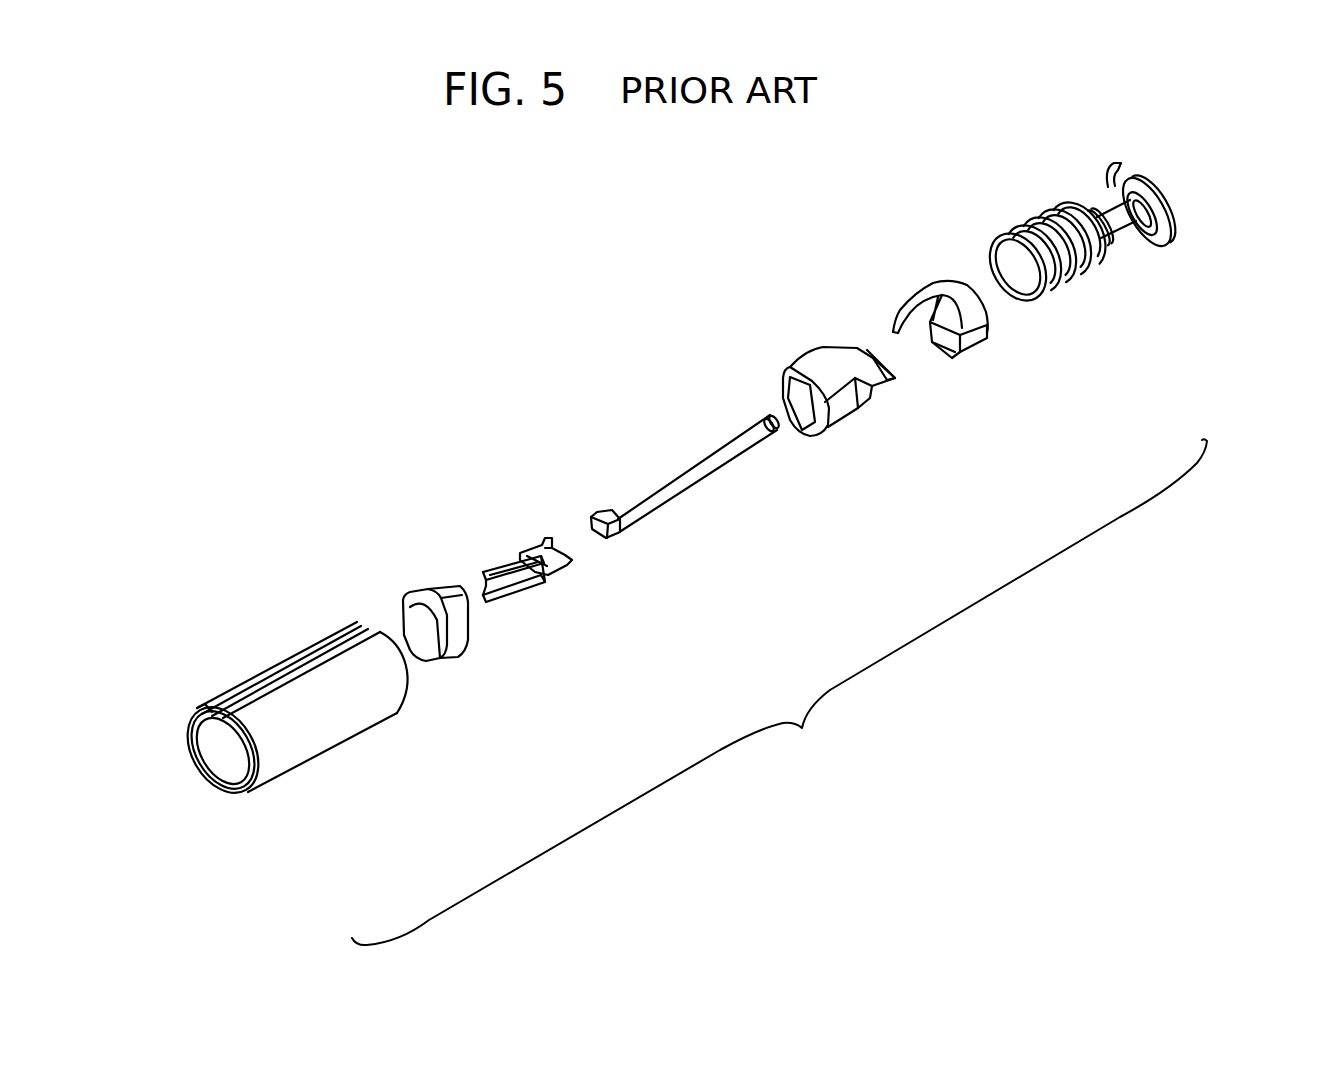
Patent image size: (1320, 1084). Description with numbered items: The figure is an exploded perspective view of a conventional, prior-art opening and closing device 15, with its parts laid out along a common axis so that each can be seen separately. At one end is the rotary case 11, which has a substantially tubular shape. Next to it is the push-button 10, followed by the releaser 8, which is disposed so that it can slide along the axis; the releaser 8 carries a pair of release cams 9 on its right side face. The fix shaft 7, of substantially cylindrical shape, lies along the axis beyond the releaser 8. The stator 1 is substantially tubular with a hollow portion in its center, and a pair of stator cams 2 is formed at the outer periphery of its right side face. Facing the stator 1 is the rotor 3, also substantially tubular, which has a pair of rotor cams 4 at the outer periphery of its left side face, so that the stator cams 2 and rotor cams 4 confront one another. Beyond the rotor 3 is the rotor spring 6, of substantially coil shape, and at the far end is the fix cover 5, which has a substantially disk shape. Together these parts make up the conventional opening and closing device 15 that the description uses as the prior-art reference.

The stator 1 is at (842, 415).
The stator cams 2 is at (893, 373).
The rotor 3 is at (985, 342).
The rotor cams 4 is at (897, 317).
The fix cover 5 is at (1170, 225).
The rotor spring 6 is at (1077, 277).
The fix shaft 7 is at (687, 487).
The releaser 8 is at (520, 593).
The release cams 9 is at (572, 563).
The push-button 10 is at (455, 655).
The rotary case 11 is at (337, 723).
The conventional opening and closing device 15 is at (822, 768).